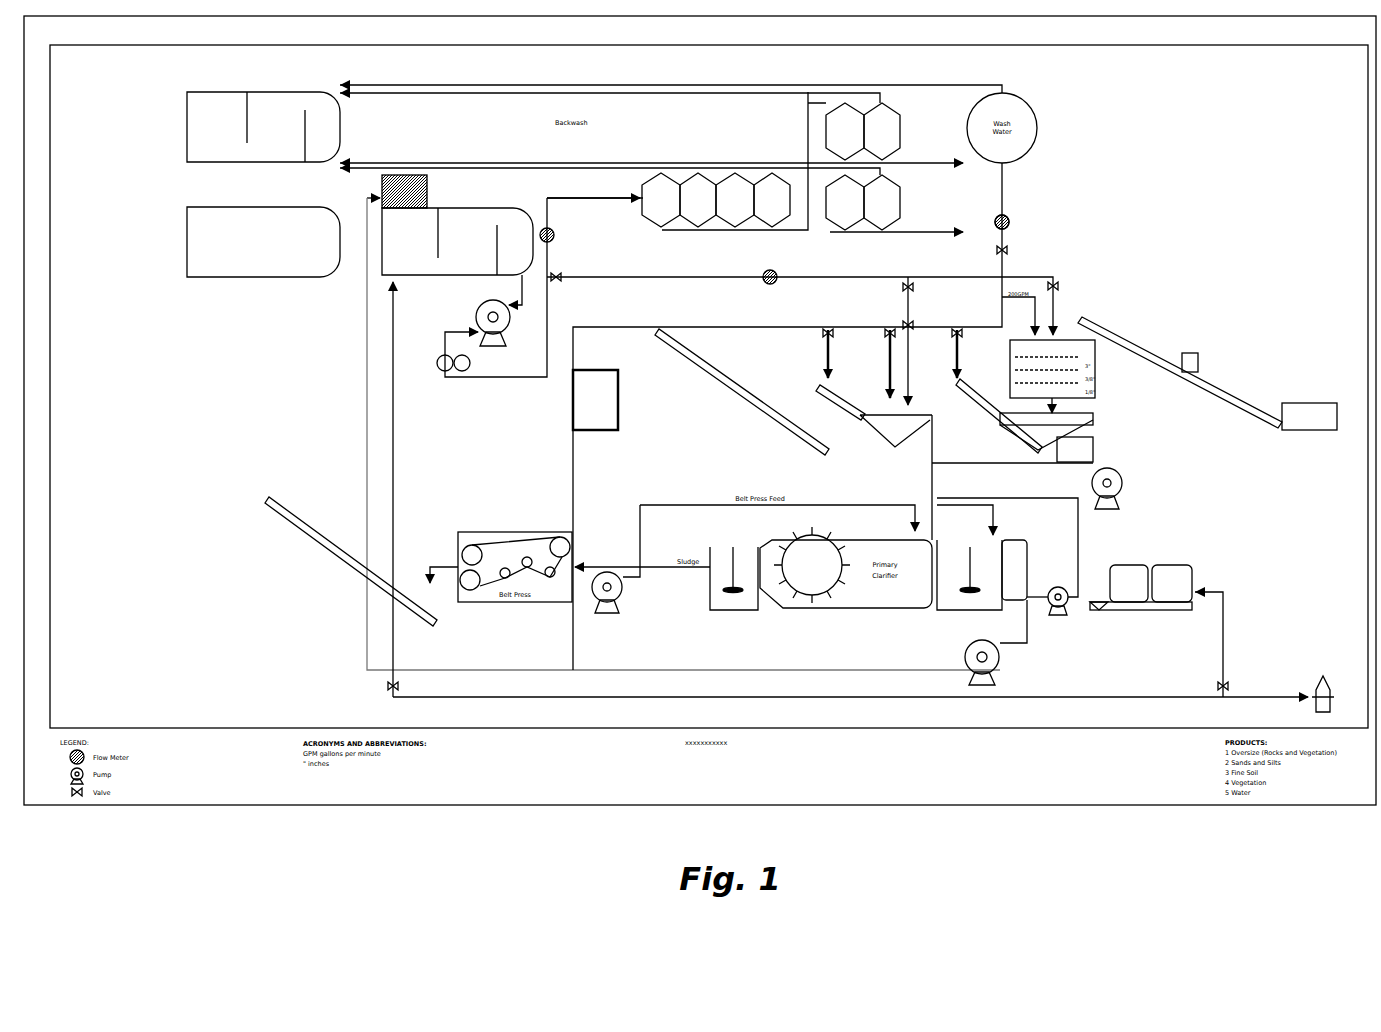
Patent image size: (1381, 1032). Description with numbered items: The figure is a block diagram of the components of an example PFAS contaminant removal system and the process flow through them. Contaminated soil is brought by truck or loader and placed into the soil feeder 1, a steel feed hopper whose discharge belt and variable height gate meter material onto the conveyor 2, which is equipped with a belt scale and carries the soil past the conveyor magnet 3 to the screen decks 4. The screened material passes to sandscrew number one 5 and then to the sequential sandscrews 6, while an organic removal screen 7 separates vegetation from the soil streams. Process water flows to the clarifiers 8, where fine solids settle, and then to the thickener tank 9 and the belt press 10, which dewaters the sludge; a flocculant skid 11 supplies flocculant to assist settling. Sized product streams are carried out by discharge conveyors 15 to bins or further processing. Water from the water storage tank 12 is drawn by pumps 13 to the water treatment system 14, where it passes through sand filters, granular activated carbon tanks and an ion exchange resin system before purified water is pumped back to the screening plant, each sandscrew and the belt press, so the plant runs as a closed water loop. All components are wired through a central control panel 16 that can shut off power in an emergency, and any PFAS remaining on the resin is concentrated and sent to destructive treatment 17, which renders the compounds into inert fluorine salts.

The soil feeder 1 is at (1313, 400).
The conveyor 2 is at (1112, 322).
The conveyor magnet 3 is at (1201, 365).
The screen decks 4 is at (1105, 381).
The sandscrew #1 5 is at (1076, 415).
The sequential sandscrews #2-n 6 is at (889, 431).
The organic removal screen 7 is at (1099, 444).
The clarifiers 8 is at (879, 541).
The thickener tank 9 is at (748, 546).
The belt press 10 is at (542, 538).
The flocculant skid 11 is at (1180, 580).
The water storage tank 12 is at (400, 258).
The pumps 13 is at (495, 334).
The water treatment system 14 is at (852, 127).
The discharge conveyors 15 is at (733, 395).
The central control panel 16 is at (610, 366).
The destructive treatment 17 is at (222, 252).